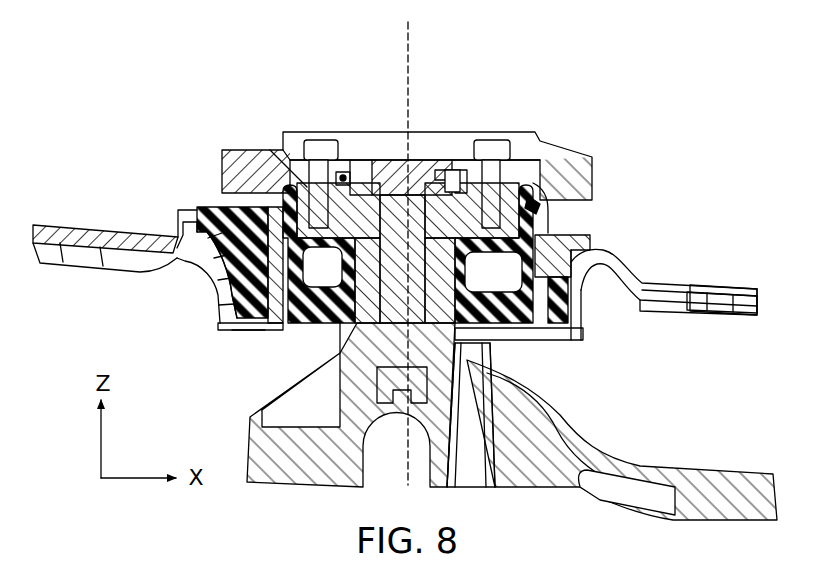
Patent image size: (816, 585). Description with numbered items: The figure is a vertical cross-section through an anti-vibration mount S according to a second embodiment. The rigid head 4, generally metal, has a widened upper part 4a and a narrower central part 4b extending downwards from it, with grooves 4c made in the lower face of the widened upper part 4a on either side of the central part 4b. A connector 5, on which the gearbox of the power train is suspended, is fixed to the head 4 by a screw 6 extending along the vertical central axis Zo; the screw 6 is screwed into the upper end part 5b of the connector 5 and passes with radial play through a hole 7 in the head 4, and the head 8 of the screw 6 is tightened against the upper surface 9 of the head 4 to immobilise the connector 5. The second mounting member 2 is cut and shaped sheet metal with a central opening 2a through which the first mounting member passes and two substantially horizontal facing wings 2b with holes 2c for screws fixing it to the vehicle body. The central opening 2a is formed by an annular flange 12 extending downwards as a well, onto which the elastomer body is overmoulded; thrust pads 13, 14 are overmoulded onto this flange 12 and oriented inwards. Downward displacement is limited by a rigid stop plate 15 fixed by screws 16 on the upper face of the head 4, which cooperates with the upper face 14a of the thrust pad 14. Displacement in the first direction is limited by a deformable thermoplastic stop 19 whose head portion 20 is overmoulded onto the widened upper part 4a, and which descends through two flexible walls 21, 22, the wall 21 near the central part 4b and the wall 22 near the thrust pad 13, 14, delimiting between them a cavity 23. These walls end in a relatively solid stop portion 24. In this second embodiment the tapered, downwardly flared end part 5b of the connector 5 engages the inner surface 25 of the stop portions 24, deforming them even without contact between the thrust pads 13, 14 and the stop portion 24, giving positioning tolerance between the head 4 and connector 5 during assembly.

The second mounting member 2 is at (700, 222).
The central opening 2a is at (246, 333).
The wings 2b is at (150, 232).
The holes 2c is at (712, 292).
The head 4 is at (530, 192).
The widened upper part 4a is at (543, 210).
The central part 4b is at (417, 165).
The grooves 4c is at (450, 180).
The connector 5 is at (606, 445).
The upper end part 5b is at (433, 363).
The screw 6 is at (388, 330).
The hole 7 is at (358, 270).
The head of the screw 8 is at (430, 238).
The upper surface 9 is at (389, 190).
The annular flange 12 is at (218, 308).
The thrust pad 13 is at (570, 340).
The thrust pad 14 is at (232, 273).
The upper face 14a is at (208, 205).
The stop plate 15 is at (540, 162).
The screws 16 is at (318, 147).
The deformable stop 19 is at (527, 341).
The head portion 20 is at (533, 200).
The flexible wall 21 is at (285, 278).
The flexible wall 22 is at (325, 250).
The cavity 23 is at (343, 175).
The stop portion 24 is at (481, 360).
The inner surface 25 is at (465, 365).
The anti-vibration mount S is at (677, 135).
The vertical central axis Zo is at (413, 45).